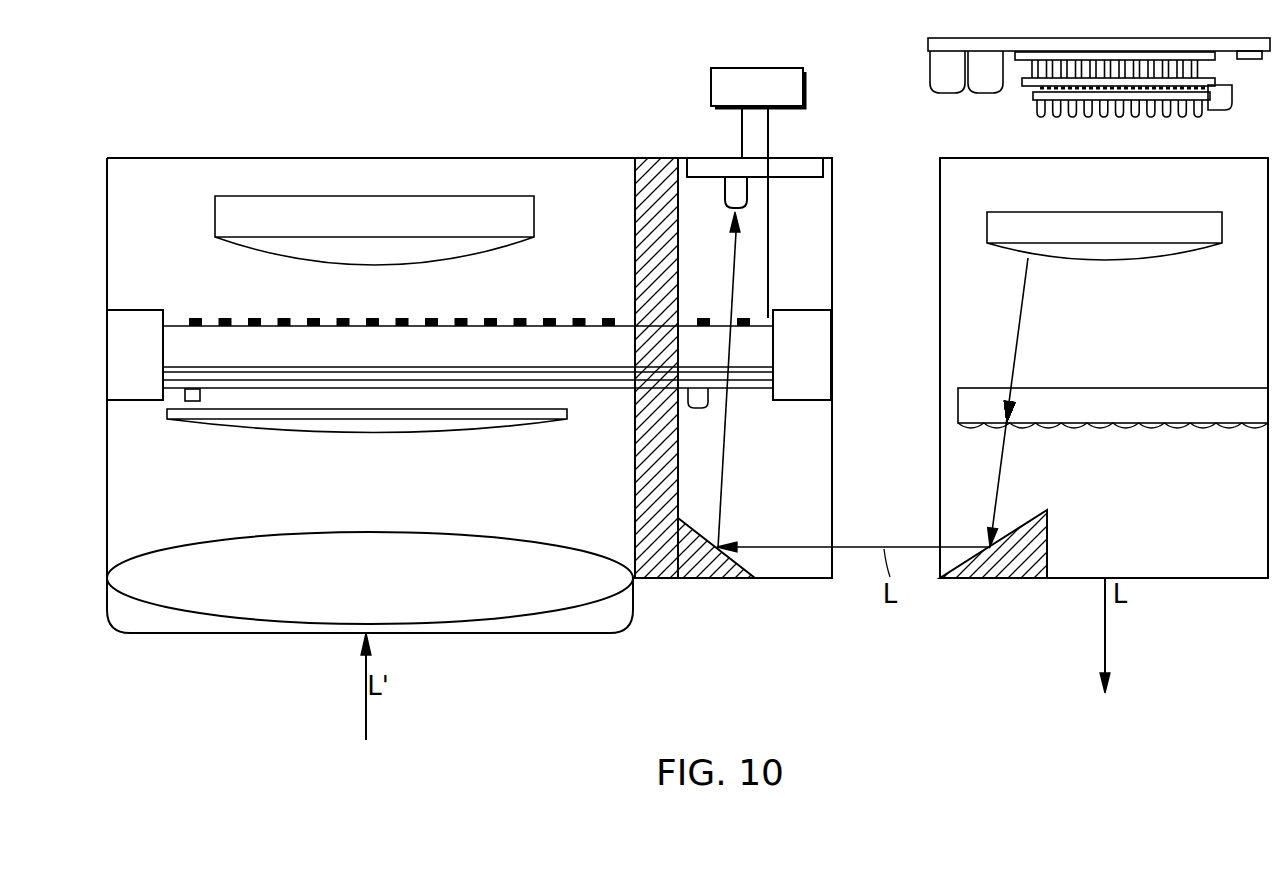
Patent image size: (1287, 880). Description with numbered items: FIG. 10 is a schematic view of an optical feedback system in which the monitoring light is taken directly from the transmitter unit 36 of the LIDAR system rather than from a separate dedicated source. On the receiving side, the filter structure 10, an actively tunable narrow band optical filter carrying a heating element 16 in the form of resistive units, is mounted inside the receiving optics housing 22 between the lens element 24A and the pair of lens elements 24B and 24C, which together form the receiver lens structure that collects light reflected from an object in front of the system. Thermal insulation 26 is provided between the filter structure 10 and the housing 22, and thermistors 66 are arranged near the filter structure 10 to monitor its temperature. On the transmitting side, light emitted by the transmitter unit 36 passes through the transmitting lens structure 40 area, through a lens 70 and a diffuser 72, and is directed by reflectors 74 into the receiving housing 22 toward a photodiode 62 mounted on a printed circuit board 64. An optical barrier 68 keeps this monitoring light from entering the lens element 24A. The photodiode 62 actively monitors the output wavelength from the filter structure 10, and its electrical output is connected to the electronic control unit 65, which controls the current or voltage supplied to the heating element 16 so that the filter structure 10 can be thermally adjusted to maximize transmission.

The filter structure 10 is at (414, 340).
The heating structure 16 is at (572, 318).
The receiving optics housing 22 is at (373, 168).
The lens element 24A is at (213, 217).
The lens element 24B is at (168, 416).
The lens element 24C is at (198, 553).
The thermal insulation 26 is at (800, 387).
The transmitter unit 36 is at (1170, 117).
The transmitting lens structure 40 is at (1203, 551).
The photodiode 62 is at (735, 187).
The printed circuit board 64 is at (780, 179).
The electronic control unit 65 is at (711, 86).
The thermistors 66 is at (190, 402).
The optical barrier 68 is at (655, 567).
The lens 70 is at (1105, 222).
The diffuser 72 is at (1192, 410).
The reflectors 74 is at (710, 581).